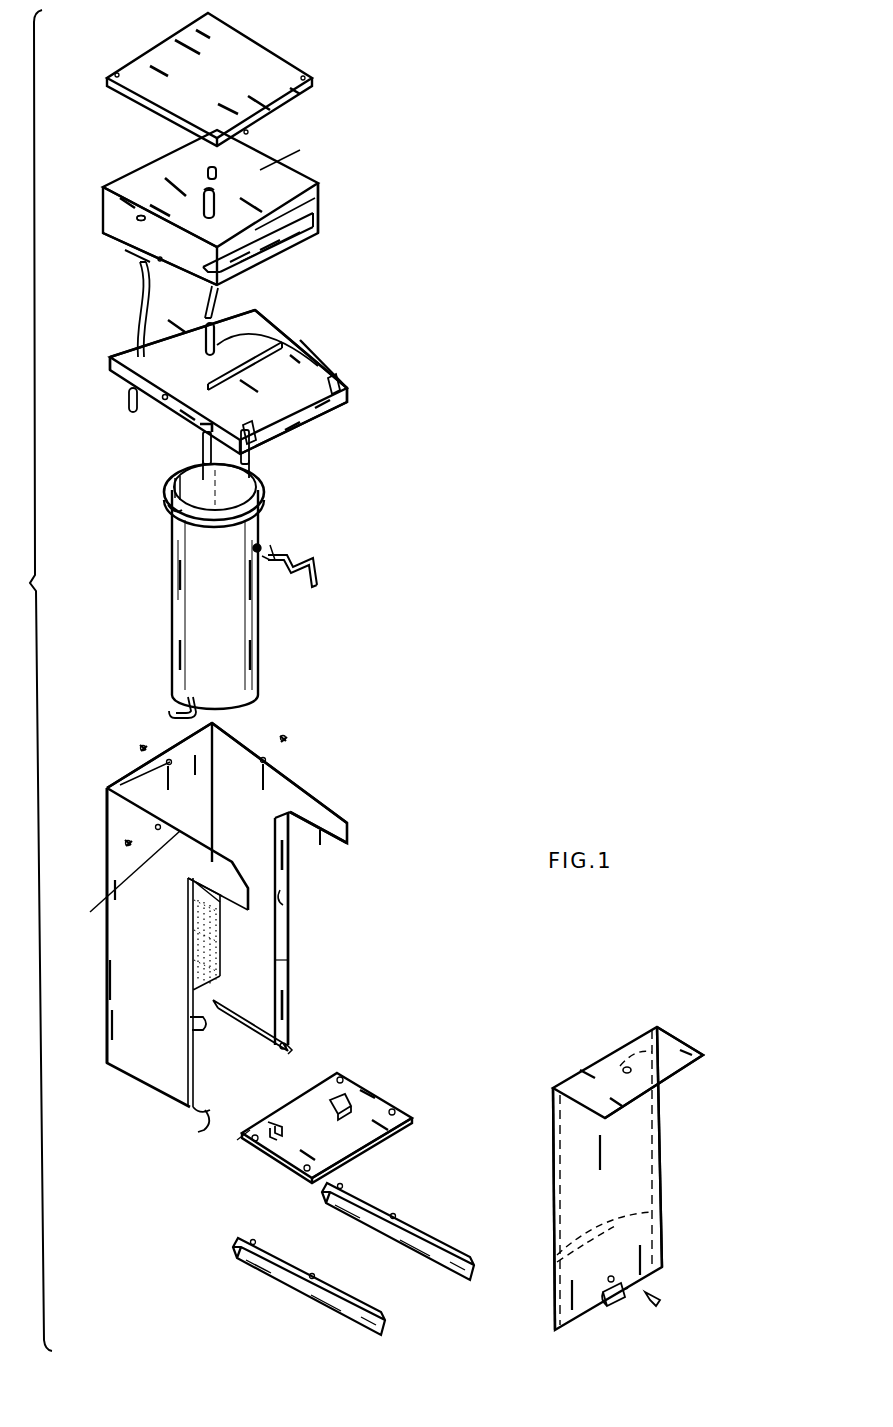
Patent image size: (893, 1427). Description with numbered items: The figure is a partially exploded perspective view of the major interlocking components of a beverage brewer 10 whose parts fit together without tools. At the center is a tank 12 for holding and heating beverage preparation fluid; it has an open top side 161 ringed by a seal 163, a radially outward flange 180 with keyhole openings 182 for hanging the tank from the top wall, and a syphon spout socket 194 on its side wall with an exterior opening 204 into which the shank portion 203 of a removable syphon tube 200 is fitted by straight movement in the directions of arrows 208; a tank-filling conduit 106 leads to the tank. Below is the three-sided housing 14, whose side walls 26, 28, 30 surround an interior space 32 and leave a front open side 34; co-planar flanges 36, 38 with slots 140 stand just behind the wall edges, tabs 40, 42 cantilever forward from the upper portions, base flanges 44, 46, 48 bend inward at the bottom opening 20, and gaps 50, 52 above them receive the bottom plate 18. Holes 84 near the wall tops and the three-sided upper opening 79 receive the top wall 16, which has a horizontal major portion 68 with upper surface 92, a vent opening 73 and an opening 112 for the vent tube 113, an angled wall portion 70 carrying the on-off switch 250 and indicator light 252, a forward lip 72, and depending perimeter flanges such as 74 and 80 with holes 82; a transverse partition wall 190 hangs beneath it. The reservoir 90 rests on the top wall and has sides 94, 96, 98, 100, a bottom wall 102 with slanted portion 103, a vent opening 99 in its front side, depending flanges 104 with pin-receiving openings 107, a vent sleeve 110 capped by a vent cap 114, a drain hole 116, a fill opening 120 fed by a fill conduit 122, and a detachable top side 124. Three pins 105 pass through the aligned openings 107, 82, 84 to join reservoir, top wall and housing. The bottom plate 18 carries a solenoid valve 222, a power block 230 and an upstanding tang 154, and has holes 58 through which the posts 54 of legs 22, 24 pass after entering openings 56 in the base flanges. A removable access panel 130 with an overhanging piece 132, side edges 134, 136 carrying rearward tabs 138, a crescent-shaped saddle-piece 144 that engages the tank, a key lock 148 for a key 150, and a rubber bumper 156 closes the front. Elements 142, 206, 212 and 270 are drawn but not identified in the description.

The brewer 10 is at (26, 680).
The tank 12 is at (262, 661).
The housing 14 is at (330, 782).
The top wall 16 is at (247, 310).
The bottom plate 18 is at (344, 1072).
The bottom opening 20 is at (241, 1137).
The leg 22 is at (420, 1233).
The leg 24 is at (335, 1290).
The side wall 26 is at (317, 758).
The back wall 28 is at (112, 783).
The side wall 30 is at (120, 858).
The interior space 32 is at (232, 760).
The open side 34 is at (283, 980).
The flange 36 is at (270, 903).
The flange 38 is at (193, 960).
The tab 40 is at (317, 817).
The tab 42 is at (200, 893).
The base flange 44 is at (287, 1008).
The base flange 46 is at (205, 1018).
The base flange 48 is at (207, 1122).
The gap 50 is at (292, 1046).
The gap 52 is at (195, 1103).
The leg post 54 is at (393, 1214).
The opening 56 is at (277, 1037).
The hole 58 is at (392, 1112).
The horizontal major portion 68 is at (110, 358).
The angled wall portion 70 is at (320, 400).
The forward lip 72 is at (340, 413).
The vent opening 73 is at (317, 360).
The perimeter flange 74 is at (122, 375).
The upper opening 79 is at (121, 884).
The top wall flange 80 is at (130, 783).
The hole 82 is at (167, 400).
The hole 84 is at (166, 763).
The reservoir 90 is at (292, 156).
The upper surface 92 is at (227, 310).
The side 94 is at (292, 155).
The rear side 96 is at (142, 215).
The side 98 is at (110, 215).
The vent opening 99 is at (317, 230).
The front side 100 is at (313, 200).
The bottom wall 102 is at (278, 200).
The slanted portion 103 is at (293, 230).
The flange 104 is at (127, 238).
The pin 105 is at (140, 745).
The tank-filling conduit 106 is at (145, 335).
The pin-receiving opening 107 is at (140, 263).
The air vent sleeve 110 is at (207, 200).
The opening 112 is at (277, 330).
The vent tube 113 is at (250, 310).
The vent cap 114 is at (207, 197).
The drain hole 116 is at (140, 205).
The fill opening 120 is at (218, 170).
The fill conduit 122 is at (203, 298).
The top side 124 is at (248, 48).
The access panel 130 is at (645, 1123).
The overhanging piece 132 is at (677, 1043).
The side edge 134 is at (662, 1185).
The side edge 136 is at (552, 1185).
The tab 138 is at (633, 1033).
The slot 140 is at (280, 860).
The wall edge 142 is at (288, 952).
The saddle-piece 144 is at (613, 1225).
The key lock 148 is at (605, 1292).
The key 150 is at (660, 1294).
The tang 154 is at (370, 1148).
The rubber bumper 156 is at (620, 1300).
The open top side 161 is at (173, 485).
The seal 163 is at (170, 513).
The flange 180 is at (258, 487).
The keyhole opening 182 is at (257, 517).
The partition wall 190 is at (207, 445).
The syphon spout socket 194 is at (248, 543).
The syphon tube 200 is at (315, 558).
The shank portion 203 is at (278, 542).
The opening 204 is at (267, 557).
The hanger legs 206 is at (203, 473).
The arrows 208 is at (333, 590).
The hole 212 is at (623, 1068).
The solenoid valve 222 is at (282, 1123).
The power block 230 is at (320, 1107).
The on-off switch 250 is at (340, 378).
The indicator light 252 is at (260, 433).
The slot direction 270 is at (283, 973).